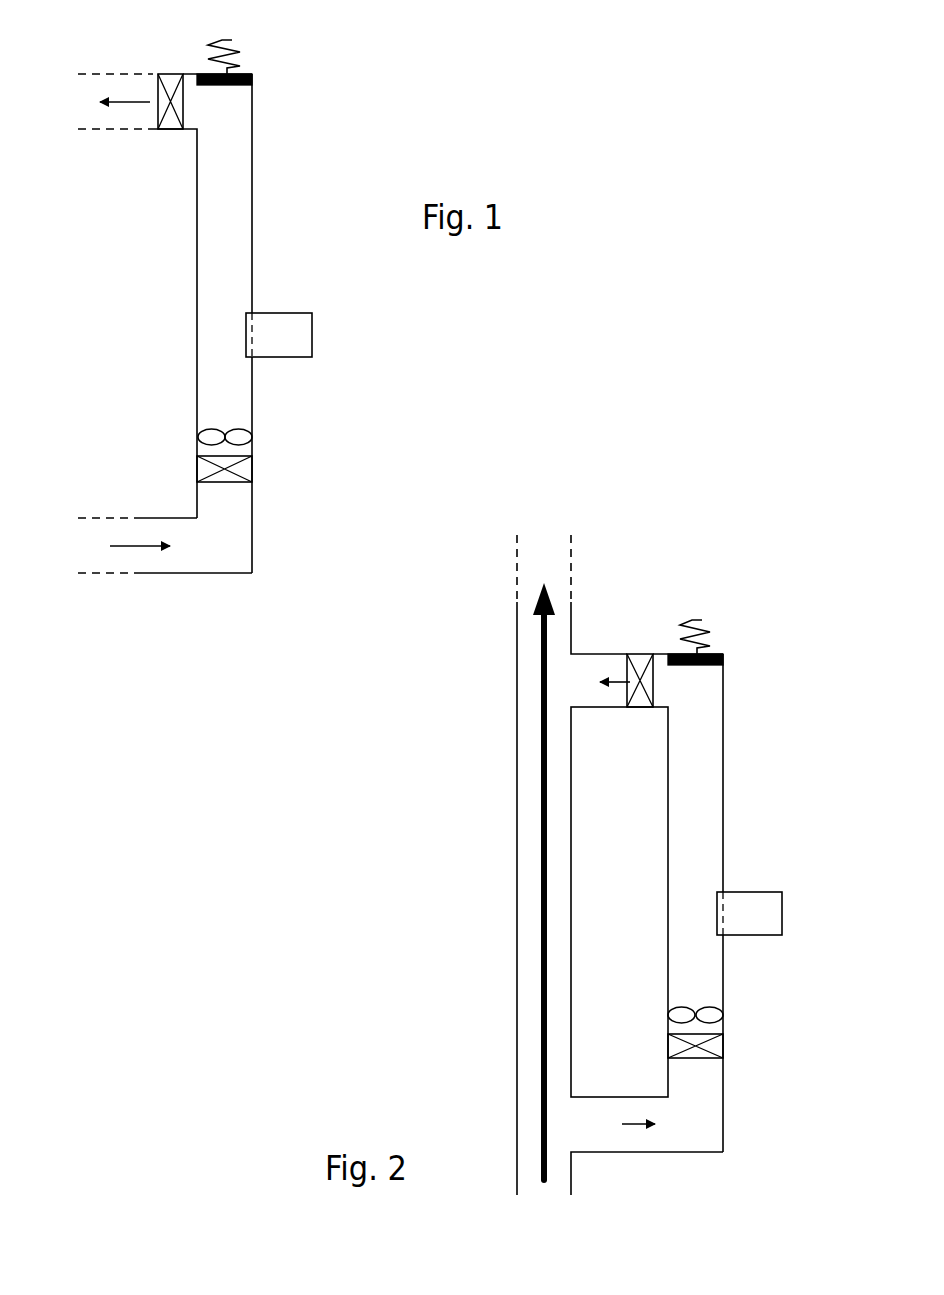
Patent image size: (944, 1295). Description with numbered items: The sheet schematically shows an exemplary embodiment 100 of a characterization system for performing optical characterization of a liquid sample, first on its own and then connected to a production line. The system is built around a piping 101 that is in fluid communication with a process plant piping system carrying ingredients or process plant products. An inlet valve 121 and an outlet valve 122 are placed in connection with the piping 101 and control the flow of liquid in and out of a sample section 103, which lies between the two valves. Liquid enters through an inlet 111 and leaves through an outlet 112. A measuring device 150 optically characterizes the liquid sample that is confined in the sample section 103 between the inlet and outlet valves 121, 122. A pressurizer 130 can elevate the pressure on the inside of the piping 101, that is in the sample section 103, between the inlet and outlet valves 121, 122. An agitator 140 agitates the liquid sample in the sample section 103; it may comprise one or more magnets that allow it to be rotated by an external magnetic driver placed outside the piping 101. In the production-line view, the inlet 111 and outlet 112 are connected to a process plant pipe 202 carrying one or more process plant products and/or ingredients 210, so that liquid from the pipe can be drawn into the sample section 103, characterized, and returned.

In FIG. 1, the characterization system 100 is at (267, 622).
In FIG. 1, the piping 101 is at (252, 227).
In FIG. 2, the piping 101 is at (723, 804).
In FIG. 1, the sample section 103 is at (215, 237).
In FIG. 2, the sample section 103 is at (687, 805).
In FIG. 1, the inlet 111 is at (117, 547).
In FIG. 2, the inlet 111 is at (616, 1125).
In FIG. 1, the outlet 112 is at (97, 102).
In FIG. 2, the outlet 112 is at (592, 682).
In FIG. 1, the inlet valve 121 is at (207, 478).
In FIG. 2, the inlet valve 121 is at (680, 1055).
In FIG. 1, the outlet valve 122 is at (167, 85).
In FIG. 2, the outlet valve 122 is at (630, 663).
In FIG. 1, the pressurizer 130 is at (253, 80).
In FIG. 2, the pressurizer 130 is at (723, 658).
In FIG. 1, the agitator 140 is at (208, 437).
In FIG. 2, the agitator 140 is at (682, 1015).
In FIG. 1, the measuring device 150 is at (312, 343).
In FIG. 2, the measuring device 150 is at (782, 922).
In FIG. 2, the process plant pipe 202 is at (517, 793).
In FIG. 2, the process plant products and/or ingredients 210 is at (544, 892).